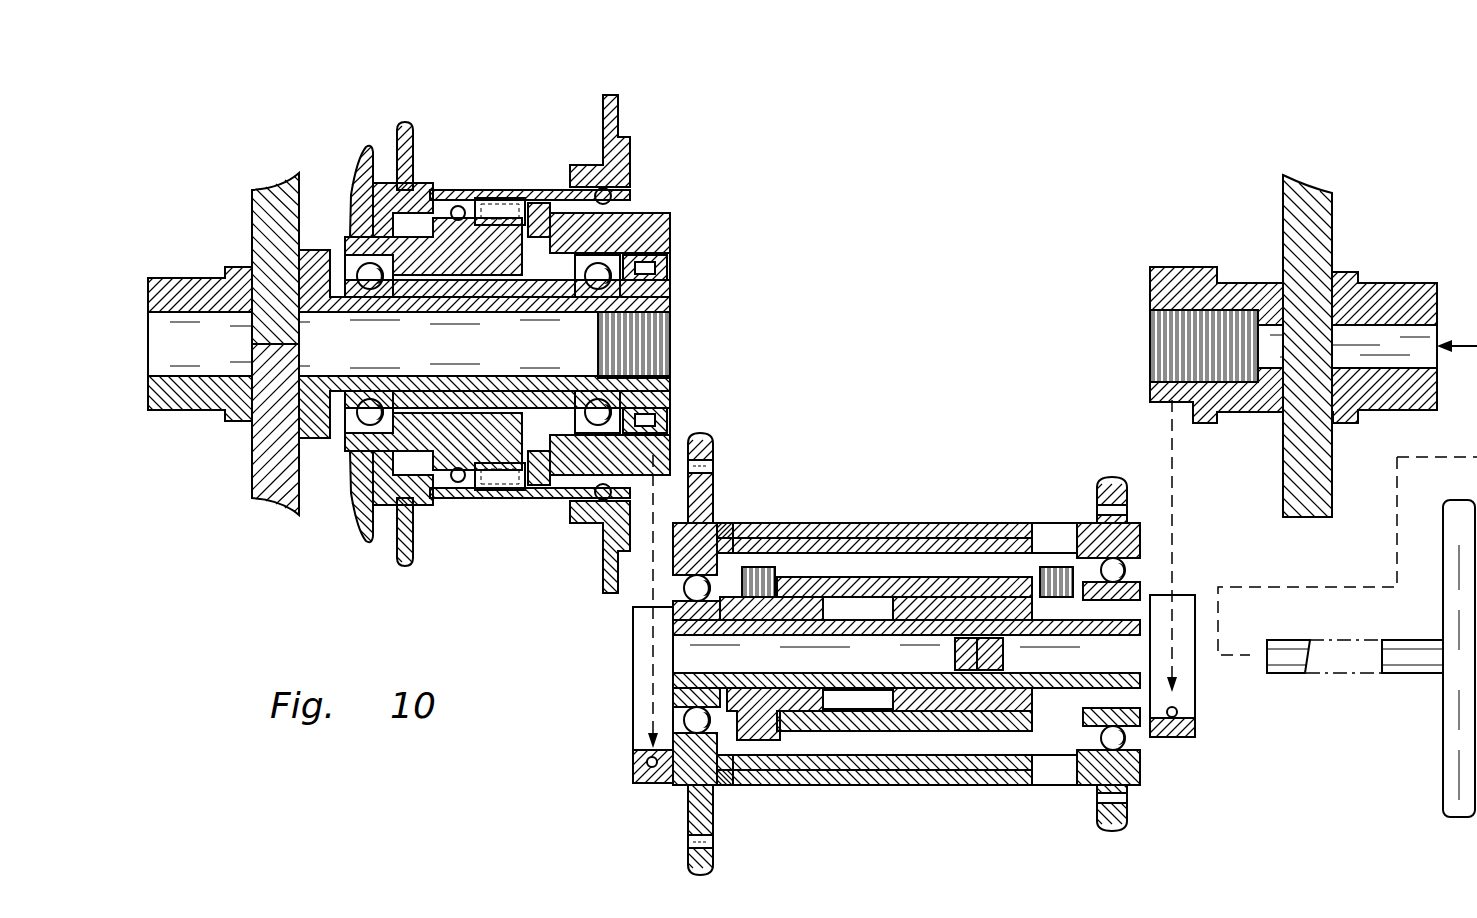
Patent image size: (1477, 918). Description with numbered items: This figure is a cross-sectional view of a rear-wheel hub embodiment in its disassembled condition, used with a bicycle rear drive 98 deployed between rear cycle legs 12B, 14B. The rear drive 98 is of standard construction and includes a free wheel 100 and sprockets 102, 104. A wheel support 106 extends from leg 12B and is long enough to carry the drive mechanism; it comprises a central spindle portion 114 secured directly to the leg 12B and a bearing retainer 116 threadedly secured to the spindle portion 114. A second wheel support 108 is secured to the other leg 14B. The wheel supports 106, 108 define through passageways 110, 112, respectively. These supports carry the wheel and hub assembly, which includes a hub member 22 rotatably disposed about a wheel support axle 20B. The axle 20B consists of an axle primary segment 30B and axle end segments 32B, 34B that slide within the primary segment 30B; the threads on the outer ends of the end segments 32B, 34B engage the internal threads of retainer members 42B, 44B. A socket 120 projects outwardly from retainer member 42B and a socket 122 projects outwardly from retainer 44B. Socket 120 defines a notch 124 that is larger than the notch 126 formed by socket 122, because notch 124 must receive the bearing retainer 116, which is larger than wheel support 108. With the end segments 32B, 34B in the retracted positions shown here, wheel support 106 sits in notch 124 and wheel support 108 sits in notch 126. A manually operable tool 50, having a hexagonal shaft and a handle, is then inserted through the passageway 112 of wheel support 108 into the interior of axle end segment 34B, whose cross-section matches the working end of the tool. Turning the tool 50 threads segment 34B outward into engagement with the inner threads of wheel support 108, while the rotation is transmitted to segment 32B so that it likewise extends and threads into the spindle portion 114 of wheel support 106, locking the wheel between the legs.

The rear cycle leg 12B is at (262, 222).
The rear cycle leg 14B is at (1291, 205).
The wheel support axle 20B is at (858, 742).
The hub member 22 is at (878, 512).
The axle primary segment 30B is at (900, 577).
The axle end segment 32B is at (863, 615).
The axle end segment 34B is at (933, 690).
The retainer member 42B is at (758, 700).
The retainer member 44B is at (1140, 588).
The manually operable tool 50 is at (1432, 768).
The bicycle rear drive 98 is at (466, 186).
The free wheel 100 is at (455, 490).
The sprocket 102 is at (397, 547).
The sprocket 104 is at (607, 560).
The wheel support 106 is at (337, 392).
The wheel support 108 is at (1193, 272).
The through passageway 110 is at (643, 334).
The through passageway 112 is at (1342, 352).
The central spindle portion 114 is at (475, 312).
The bearing retainer 116 is at (648, 218).
The socket 120 is at (636, 766).
The socket 122 is at (1176, 733).
The notch 124 is at (638, 697).
The notch 126 is at (1187, 681).